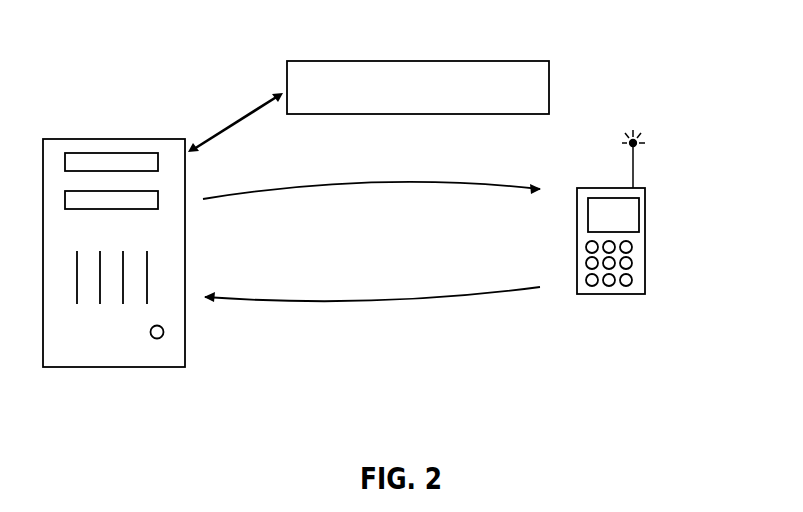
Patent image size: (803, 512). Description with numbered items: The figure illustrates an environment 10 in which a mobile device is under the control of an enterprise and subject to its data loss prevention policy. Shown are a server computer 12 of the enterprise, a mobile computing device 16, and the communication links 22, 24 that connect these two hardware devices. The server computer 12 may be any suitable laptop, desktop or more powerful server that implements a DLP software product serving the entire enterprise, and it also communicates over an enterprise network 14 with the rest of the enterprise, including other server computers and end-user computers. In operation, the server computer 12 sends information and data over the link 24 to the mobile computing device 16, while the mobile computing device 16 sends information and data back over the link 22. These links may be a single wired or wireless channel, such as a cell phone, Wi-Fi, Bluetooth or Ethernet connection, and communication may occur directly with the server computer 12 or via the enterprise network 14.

The environment 10 is at (624, 409).
The server computer 12 is at (170, 246).
The enterprise network 14 is at (528, 95).
The mobile computing device 16 is at (640, 270).
The communication link 22 is at (378, 301).
The communication link 24 is at (378, 184).